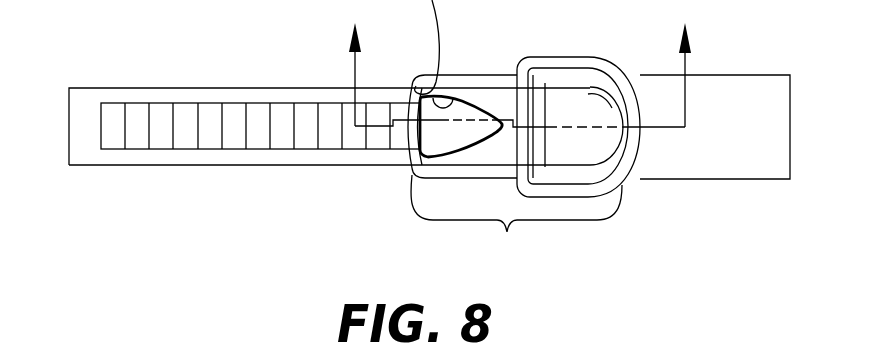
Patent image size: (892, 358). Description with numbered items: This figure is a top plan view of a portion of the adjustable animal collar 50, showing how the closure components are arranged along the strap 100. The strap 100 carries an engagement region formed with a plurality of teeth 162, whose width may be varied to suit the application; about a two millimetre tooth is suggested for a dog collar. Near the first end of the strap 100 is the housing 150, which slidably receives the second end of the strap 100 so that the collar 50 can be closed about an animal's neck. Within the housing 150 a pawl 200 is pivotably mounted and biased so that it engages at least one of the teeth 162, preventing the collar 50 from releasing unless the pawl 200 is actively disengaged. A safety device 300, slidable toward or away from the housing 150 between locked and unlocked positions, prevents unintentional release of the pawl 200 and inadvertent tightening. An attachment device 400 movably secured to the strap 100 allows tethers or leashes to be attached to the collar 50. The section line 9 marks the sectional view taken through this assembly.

The adjustable animal collar 50 is at (305, 50).
The teeth 162 is at (298, 142).
The strap 100 is at (382, 230).
The pawl 200 is at (458, 98).
The safety device 300 is at (612, 108).
The attachment device 400 is at (630, 165).
The housing 150 is at (507, 267).
The section line 9 is at (509, 63).